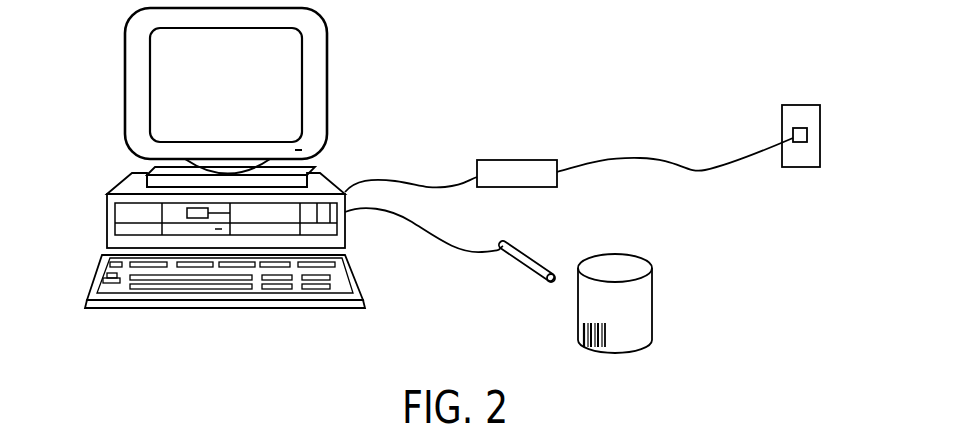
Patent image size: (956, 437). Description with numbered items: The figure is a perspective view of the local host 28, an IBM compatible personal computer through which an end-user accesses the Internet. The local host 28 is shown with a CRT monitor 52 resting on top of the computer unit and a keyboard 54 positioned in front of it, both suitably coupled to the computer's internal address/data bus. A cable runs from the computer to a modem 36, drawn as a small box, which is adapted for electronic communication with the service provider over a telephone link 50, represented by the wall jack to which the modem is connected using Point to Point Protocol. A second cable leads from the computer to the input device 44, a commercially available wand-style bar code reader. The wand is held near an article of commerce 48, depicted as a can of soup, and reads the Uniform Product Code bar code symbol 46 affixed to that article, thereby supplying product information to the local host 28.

The local host 28 is at (96, 223).
The CRT monitor 52 is at (327, 82).
The keyboard 54 is at (97, 278).
The modem 36 is at (518, 160).
The telephone link 50 is at (820, 136).
The input device 44 is at (534, 256).
The article of commerce 48 is at (652, 310).
The bar code symbol 46 is at (582, 332).